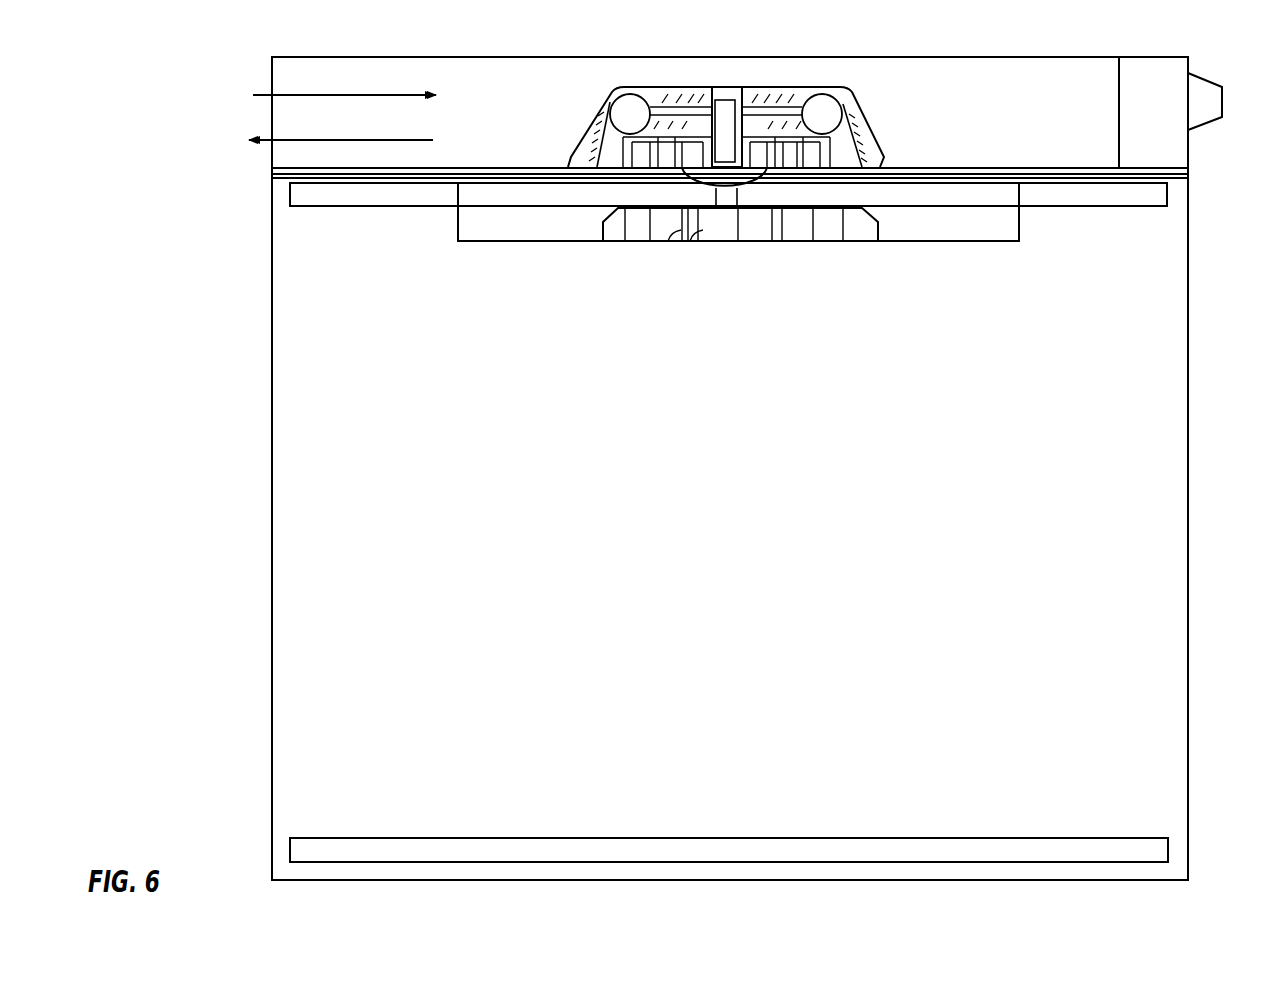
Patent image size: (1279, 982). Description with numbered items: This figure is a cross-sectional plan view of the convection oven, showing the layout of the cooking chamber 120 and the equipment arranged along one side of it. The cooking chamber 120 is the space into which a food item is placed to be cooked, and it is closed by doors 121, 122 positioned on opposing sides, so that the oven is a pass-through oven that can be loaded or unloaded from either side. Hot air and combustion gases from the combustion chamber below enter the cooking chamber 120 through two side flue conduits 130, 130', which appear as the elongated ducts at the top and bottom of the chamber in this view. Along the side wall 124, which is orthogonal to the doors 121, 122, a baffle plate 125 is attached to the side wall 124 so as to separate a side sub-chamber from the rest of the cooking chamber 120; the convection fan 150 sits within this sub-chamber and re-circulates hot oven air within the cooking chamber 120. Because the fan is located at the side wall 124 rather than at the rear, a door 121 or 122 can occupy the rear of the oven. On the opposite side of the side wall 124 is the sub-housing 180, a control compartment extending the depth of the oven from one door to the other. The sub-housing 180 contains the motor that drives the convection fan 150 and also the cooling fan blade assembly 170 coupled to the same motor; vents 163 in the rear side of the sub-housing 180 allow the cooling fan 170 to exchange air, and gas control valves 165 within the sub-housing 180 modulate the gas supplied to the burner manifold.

The cooking chamber 120 is at (893, 434).
The door 121 is at (1208, 542).
The door 122 is at (229, 336).
The side wall 124 is at (515, 168).
The baffle plate 125 is at (1019, 241).
The side flue conduit 130 is at (729, 883).
The side flue conduit 130' is at (728, 223).
The convection fan 150 is at (678, 110).
The vents 163 is at (272, 83).
The gas control valves 165 is at (1198, 88).
The cooling fan blade assembly 170 is at (752, 145).
The sub-housing 180 is at (931, 118).